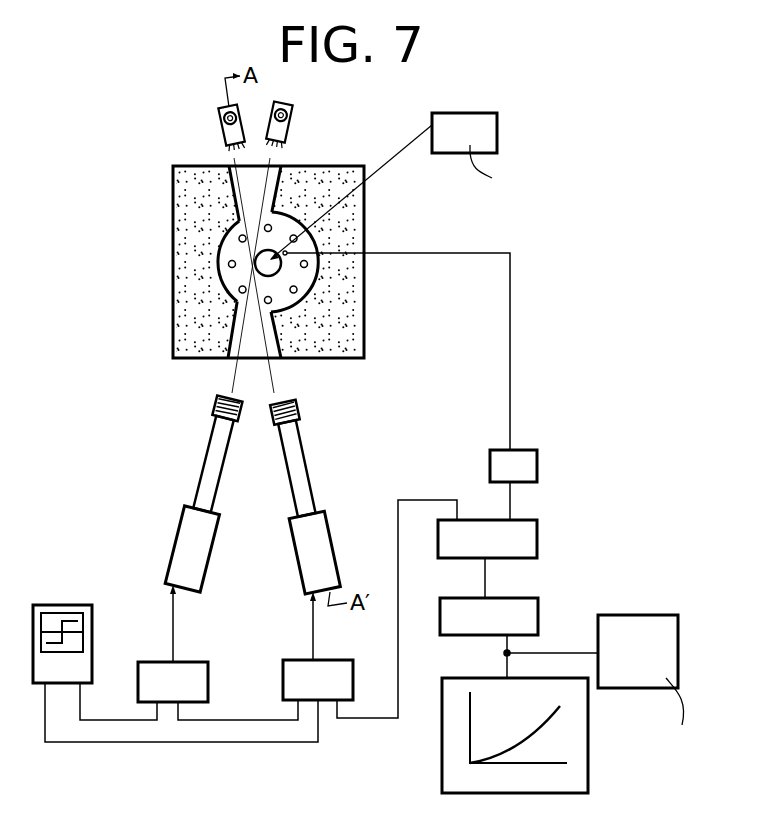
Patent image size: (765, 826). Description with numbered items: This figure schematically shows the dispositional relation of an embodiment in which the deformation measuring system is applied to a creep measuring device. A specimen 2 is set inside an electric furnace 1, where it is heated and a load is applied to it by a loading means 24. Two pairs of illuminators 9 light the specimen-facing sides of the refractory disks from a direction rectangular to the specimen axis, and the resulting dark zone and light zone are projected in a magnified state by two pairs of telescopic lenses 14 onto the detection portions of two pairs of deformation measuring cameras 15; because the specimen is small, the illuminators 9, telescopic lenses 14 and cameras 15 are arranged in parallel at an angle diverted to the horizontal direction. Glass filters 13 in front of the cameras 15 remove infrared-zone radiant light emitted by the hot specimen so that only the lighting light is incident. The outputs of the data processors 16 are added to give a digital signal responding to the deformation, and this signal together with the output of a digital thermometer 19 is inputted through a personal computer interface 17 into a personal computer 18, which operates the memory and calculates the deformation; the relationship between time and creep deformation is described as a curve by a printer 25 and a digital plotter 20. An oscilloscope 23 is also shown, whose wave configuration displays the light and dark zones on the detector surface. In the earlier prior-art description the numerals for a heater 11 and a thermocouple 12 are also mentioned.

The electric furnace 1 is at (195, 196).
The specimen 2 is at (271, 250).
The illuminators 9 is at (272, 130).
The heater 11 is at (297, 289).
The thermocouple 12 is at (288, 253).
The filters 13 is at (212, 405).
The telescopic lenses 14 is at (212, 460).
The deformation measuring cameras 15 is at (203, 532).
The data processors 16 is at (189, 672).
The personal computer interface 17 is at (523, 530).
The personal computer 18 is at (522, 610).
The digital thermometer 19 is at (521, 460).
The digital plotter 20 is at (460, 675).
The oscilloscope 23 is at (58, 605).
The loading means 24 is at (483, 129).
The printer 25 is at (645, 620).